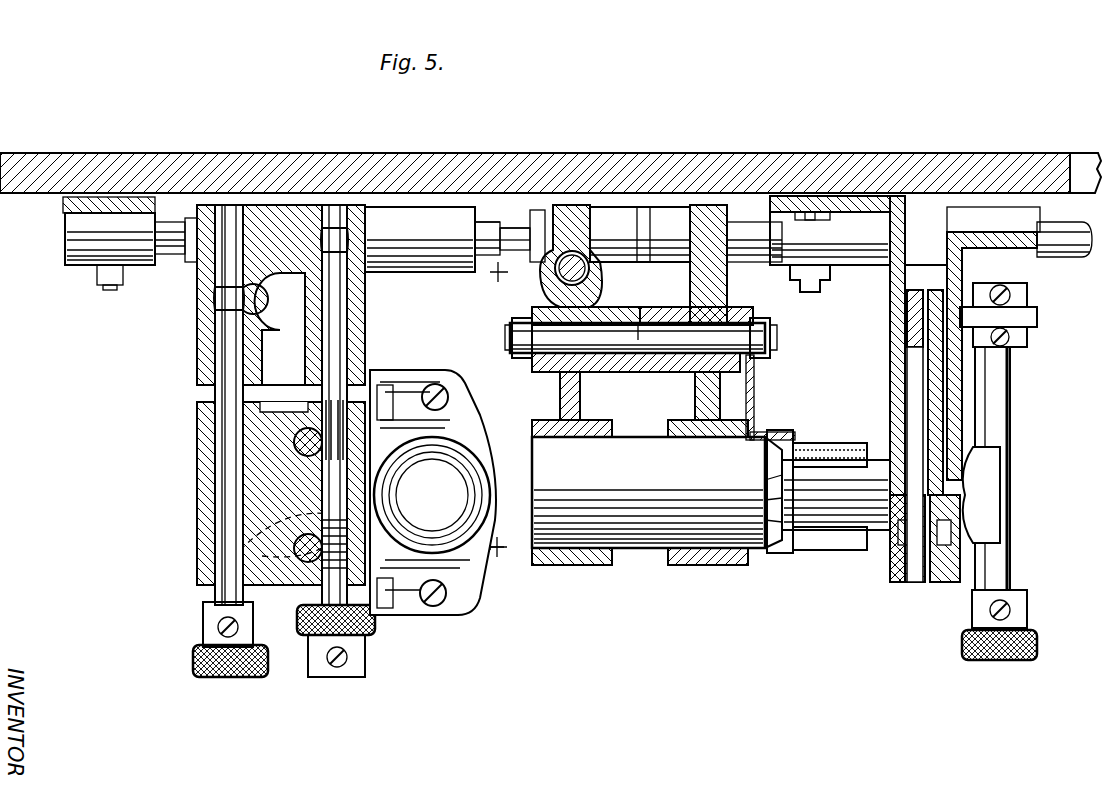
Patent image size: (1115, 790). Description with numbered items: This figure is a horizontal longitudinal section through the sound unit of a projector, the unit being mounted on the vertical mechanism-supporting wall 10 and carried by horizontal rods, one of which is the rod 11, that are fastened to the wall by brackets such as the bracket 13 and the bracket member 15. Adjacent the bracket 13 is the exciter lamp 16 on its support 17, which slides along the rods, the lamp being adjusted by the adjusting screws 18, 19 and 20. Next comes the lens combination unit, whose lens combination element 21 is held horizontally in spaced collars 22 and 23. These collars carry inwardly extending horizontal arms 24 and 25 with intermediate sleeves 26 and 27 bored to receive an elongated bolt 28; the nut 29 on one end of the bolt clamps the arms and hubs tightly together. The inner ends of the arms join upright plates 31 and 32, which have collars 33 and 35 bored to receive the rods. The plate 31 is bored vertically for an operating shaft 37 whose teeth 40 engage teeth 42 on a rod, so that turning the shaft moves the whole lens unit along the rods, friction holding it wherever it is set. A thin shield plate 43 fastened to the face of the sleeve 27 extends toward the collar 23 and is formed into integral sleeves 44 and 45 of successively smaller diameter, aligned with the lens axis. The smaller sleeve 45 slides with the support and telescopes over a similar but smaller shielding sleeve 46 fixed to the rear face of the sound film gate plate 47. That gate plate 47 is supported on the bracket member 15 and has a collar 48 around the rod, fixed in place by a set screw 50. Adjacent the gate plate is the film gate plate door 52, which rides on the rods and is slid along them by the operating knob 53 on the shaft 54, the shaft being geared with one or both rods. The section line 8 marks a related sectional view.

The section line 8- 8 is at (30, 552).
The vertical mechanism-supporting wall 10 is at (998, 680).
The rod 11 is at (168, 232).
The bracket 13 is at (77, 200).
The bracket member 15 is at (833, 192).
The exciter lamp 16 is at (437, 492).
The support 17 is at (262, 225).
The adjusting screw 18 is at (205, 625).
The adjusting screw 19 is at (358, 654).
The adjusting screw 20 is at (232, 553).
The lens combination element 21 is at (657, 492).
The collar 22 is at (577, 565).
The collar 23 is at (703, 565).
The horizontal arm 24 is at (578, 392).
The horizontal arm 25 is at (708, 407).
The sleeve 26 is at (605, 323).
The sleeve 27 is at (652, 365).
The elongated bolt 28 is at (657, 365).
The nut 29 is at (760, 323).
The upright plate 31 is at (547, 283).
The upright plate 32 is at (712, 292).
The collar 33 is at (613, 213).
The collar 35 is at (767, 222).
The operating shaft 37 is at (570, 248).
The teeth 40 is at (592, 258).
The teeth 42 is at (514, 252).
The thin shield plate 43 is at (753, 386).
The sleeve 44 is at (768, 433).
The sleeve 45 is at (840, 434).
The shielding sleeve 46 is at (877, 537).
The sound film gate plate 47 is at (900, 382).
The collar 48 is at (830, 230).
The set screw 50 is at (806, 287).
The film gate plate door 52 is at (942, 420).
The operating knob 53 is at (1028, 608).
The shaft 54 is at (1005, 437).